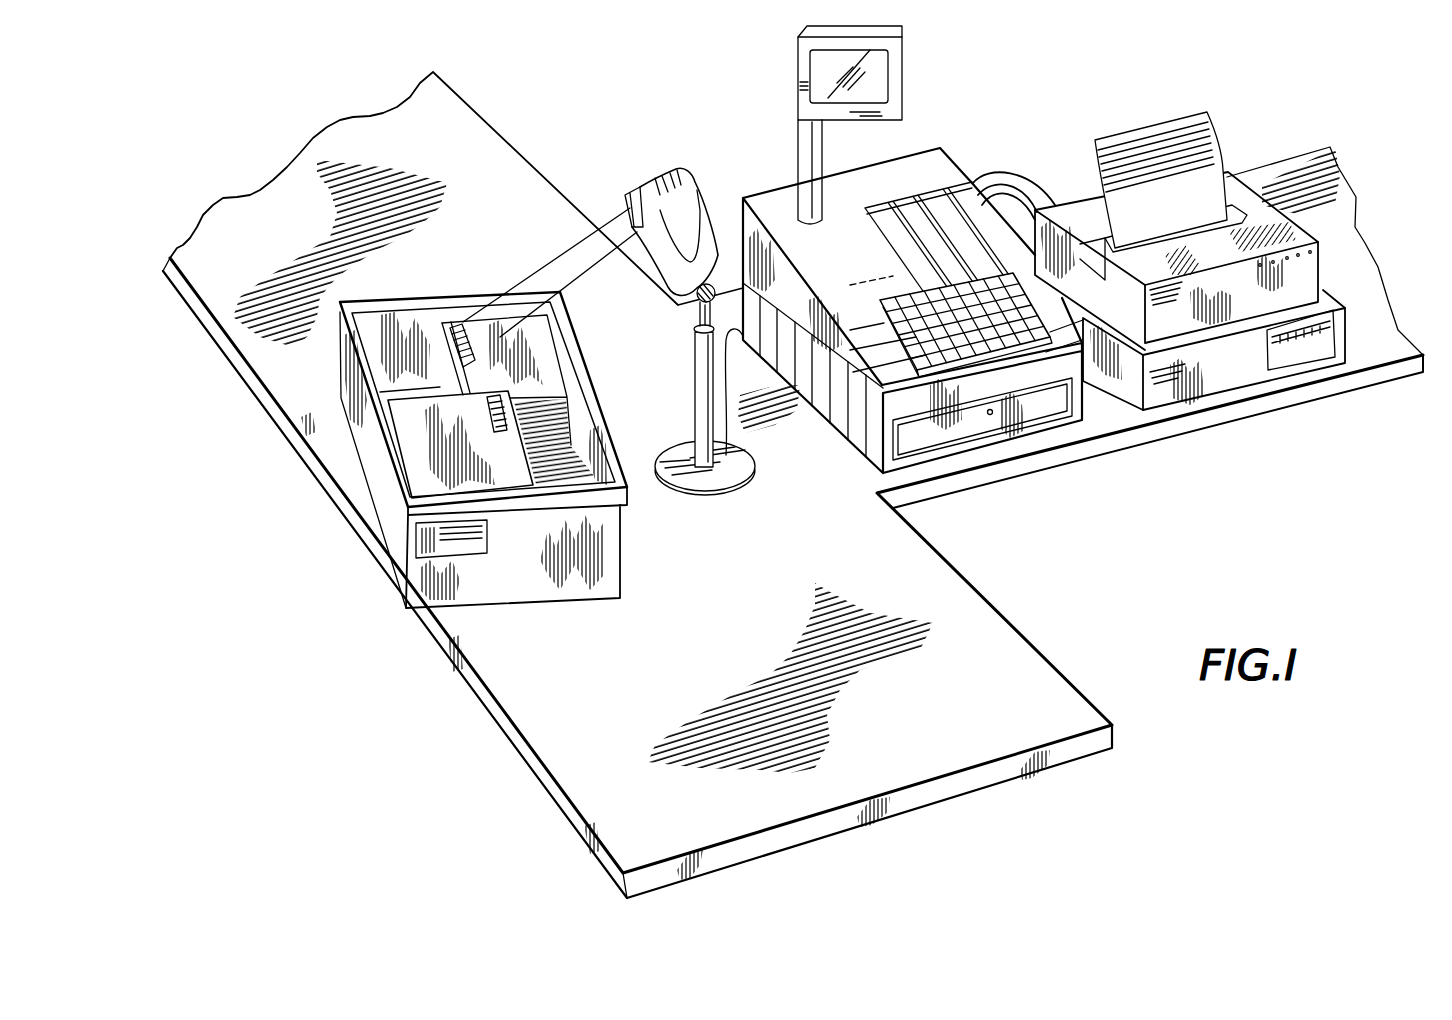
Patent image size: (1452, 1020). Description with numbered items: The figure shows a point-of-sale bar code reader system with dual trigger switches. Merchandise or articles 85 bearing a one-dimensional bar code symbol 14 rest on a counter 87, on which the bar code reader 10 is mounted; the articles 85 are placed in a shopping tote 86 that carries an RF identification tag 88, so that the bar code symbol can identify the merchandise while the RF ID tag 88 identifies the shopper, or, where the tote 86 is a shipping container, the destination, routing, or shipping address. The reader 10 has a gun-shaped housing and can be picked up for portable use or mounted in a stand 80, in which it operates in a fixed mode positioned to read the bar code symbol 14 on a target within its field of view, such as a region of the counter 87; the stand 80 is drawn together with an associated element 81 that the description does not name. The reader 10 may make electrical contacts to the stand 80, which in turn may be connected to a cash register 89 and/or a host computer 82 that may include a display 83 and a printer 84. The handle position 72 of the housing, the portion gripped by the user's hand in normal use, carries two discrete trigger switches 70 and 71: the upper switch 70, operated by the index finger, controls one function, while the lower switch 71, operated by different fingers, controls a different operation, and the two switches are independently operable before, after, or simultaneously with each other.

The bar code reader 10 is at (620, 187).
The one-dimensional bar code symbol 14 is at (460, 312).
The upper trigger switch 70 is at (700, 218).
The lower trigger switch 71 is at (689, 212).
The handle position 72 is at (709, 237).
The stand 80 is at (708, 388).
The stand base 81 is at (757, 483).
The host computer 82 is at (1338, 329).
The display 83 is at (873, 72).
The printer 84 is at (1277, 226).
The merchandise or articles 85 is at (402, 412).
The shopping tote 86 is at (603, 587).
The counter 87 is at (883, 738).
The RF identification tag 88 is at (478, 553).
The cash register 89 is at (1078, 420).